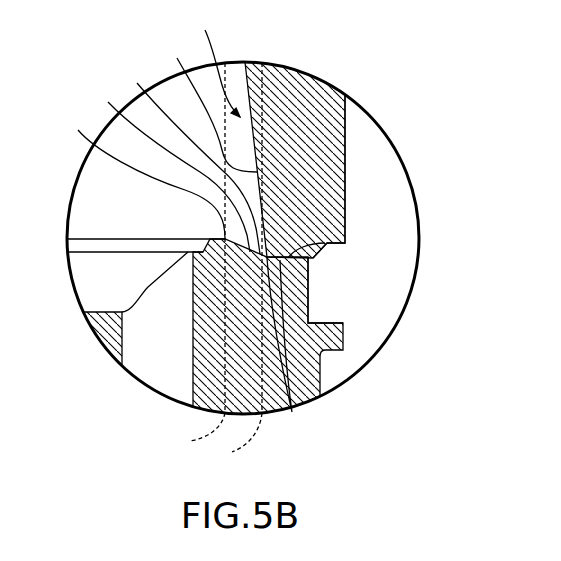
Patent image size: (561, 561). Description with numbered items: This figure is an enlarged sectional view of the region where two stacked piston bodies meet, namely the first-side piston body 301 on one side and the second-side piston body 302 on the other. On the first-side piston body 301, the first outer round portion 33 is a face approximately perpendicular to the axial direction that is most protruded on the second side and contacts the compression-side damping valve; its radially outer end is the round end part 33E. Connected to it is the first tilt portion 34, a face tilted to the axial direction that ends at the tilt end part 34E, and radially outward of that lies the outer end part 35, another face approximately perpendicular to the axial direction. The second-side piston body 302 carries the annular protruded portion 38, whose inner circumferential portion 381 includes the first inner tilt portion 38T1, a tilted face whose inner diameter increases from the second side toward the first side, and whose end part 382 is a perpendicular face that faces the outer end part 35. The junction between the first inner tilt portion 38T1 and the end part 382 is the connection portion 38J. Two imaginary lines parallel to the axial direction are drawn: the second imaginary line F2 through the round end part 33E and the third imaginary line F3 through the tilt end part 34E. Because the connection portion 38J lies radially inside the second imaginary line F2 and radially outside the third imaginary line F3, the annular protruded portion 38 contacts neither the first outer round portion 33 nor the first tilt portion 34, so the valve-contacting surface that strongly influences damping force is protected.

The first-side piston body 301 is at (328, 377).
The second-side piston body 302 is at (352, 128).
The first outer round portion 33 is at (218, 239).
The round end part 33E is at (141, 176).
The first tilt portion 34 is at (172, 168).
The tilt end part 34E is at (191, 160).
The outer end part 35 is at (322, 243).
The annular protruded portion 38 is at (357, 213).
The inner circumferential portion 381 is at (206, 66).
The end part 382 is at (310, 295).
The connection portion 38J is at (292, 412).
The first inner tilt portion 38T1 is at (198, 107).
The second imaginary line F2 is at (193, 433).
The third imaginary line F3 is at (235, 441).